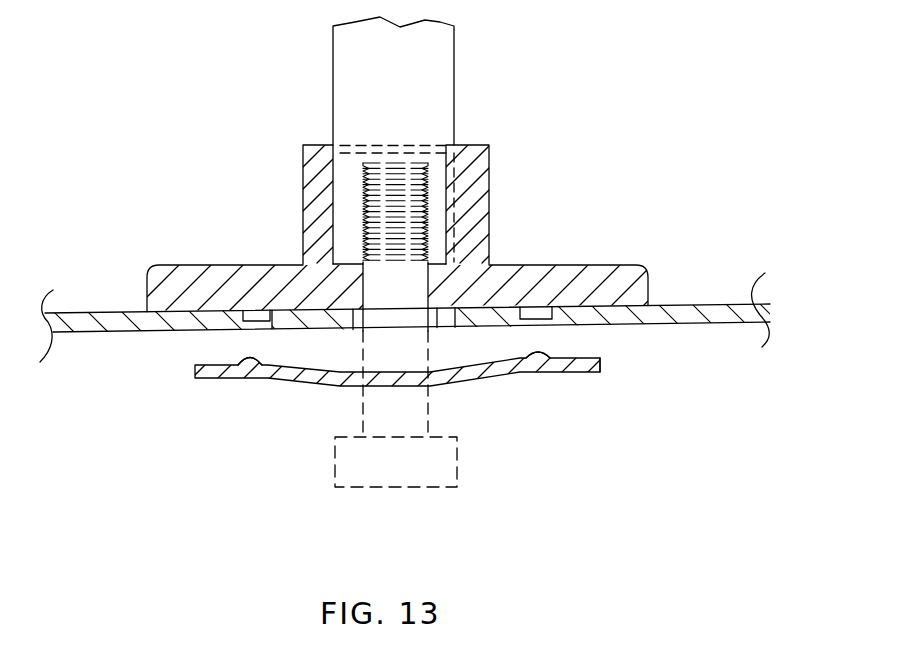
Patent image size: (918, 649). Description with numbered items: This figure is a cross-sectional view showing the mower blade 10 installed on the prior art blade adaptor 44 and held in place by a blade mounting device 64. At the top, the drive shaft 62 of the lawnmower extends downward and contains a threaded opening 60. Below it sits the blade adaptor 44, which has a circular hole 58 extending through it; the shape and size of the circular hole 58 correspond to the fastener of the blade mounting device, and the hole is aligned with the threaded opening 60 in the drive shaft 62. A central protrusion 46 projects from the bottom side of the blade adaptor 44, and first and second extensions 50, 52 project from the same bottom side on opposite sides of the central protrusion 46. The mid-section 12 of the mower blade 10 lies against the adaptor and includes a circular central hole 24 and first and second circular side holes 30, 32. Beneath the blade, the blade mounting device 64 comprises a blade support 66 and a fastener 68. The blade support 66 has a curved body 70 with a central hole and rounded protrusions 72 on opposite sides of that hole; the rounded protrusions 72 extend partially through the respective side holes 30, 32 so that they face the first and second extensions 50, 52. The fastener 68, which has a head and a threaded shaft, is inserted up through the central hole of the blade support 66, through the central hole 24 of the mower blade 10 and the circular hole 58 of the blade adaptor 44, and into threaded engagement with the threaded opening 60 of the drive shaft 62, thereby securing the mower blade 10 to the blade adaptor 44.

The mower blade 10 is at (86, 335).
The mid-section 12 is at (128, 331).
The circular central hole 24 is at (345, 327).
The first circular side hole 30 is at (247, 328).
The second circular side hole 32 is at (523, 323).
The blade adaptor 44 is at (491, 226).
The central protrusion 46 is at (432, 330).
The first extension 50 is at (282, 332).
The second extension 52 is at (513, 313).
The circular hole 58 is at (370, 300).
The threaded opening 60 is at (426, 210).
The drive shaft 62 is at (432, 90).
The blade mounting device 64 is at (479, 409).
The blade support 66 is at (587, 373).
The fastener 68 is at (442, 465).
The curved body 70 is at (208, 379).
The rounded protrusions 72 is at (250, 358).